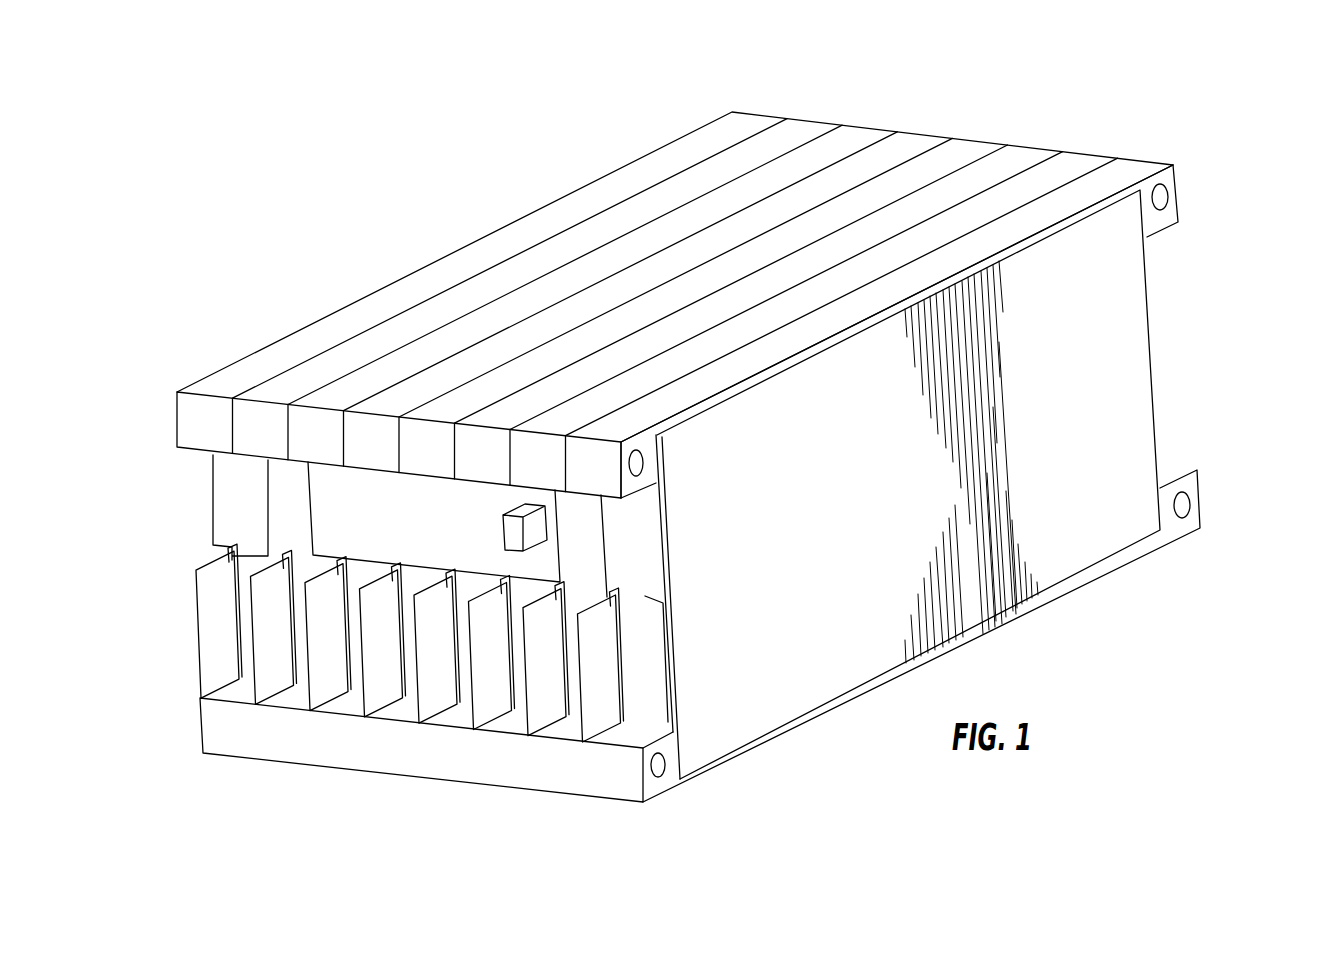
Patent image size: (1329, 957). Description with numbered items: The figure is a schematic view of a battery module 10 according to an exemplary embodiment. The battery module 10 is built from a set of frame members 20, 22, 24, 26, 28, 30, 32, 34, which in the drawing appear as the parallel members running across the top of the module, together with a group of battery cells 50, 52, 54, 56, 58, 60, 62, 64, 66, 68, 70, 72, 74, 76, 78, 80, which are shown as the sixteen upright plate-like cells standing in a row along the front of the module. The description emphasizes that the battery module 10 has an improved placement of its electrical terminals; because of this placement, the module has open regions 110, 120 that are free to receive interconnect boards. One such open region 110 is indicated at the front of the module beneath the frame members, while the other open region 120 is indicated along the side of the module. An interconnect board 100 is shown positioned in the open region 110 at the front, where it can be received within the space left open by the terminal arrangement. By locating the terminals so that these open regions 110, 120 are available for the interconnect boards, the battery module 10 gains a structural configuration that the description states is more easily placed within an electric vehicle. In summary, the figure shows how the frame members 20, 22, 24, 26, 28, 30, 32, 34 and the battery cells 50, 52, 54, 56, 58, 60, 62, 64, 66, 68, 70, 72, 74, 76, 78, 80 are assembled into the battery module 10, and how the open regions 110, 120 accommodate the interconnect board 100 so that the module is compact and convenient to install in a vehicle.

The battery module 10 is at (1253, 134).
The frame member 20 is at (753, 120).
The frame member 22 is at (810, 128).
The frame member 24 is at (866, 135).
The frame member 26 is at (917, 140).
The frame member 28 is at (973, 147).
The frame member 30 is at (1028, 152).
The frame member 32 is at (1082, 157).
The frame member 34 is at (1137, 165).
The battery cell 50 is at (209, 688).
The battery cell 52 is at (237, 676).
The battery cell 54 is at (263, 694).
The battery cell 56 is at (291, 682).
The battery cell 58 is at (318, 700).
The battery cell 60 is at (346, 689).
The battery cell 62 is at (372, 707).
The battery cell 64 is at (400, 695).
The battery cell 66 is at (427, 713).
The battery cell 68 is at (455, 701).
The battery cell 70 is at (481, 719).
The battery cell 72 is at (509, 707).
The battery cell 74 is at (536, 726).
The battery cell 76 is at (564, 714).
The battery cell 78 is at (590, 732).
The battery cell 80 is at (652, 728).
The interconnect board 100 is at (547, 552).
The open region 110 is at (206, 483).
The open region 120 is at (1168, 278).